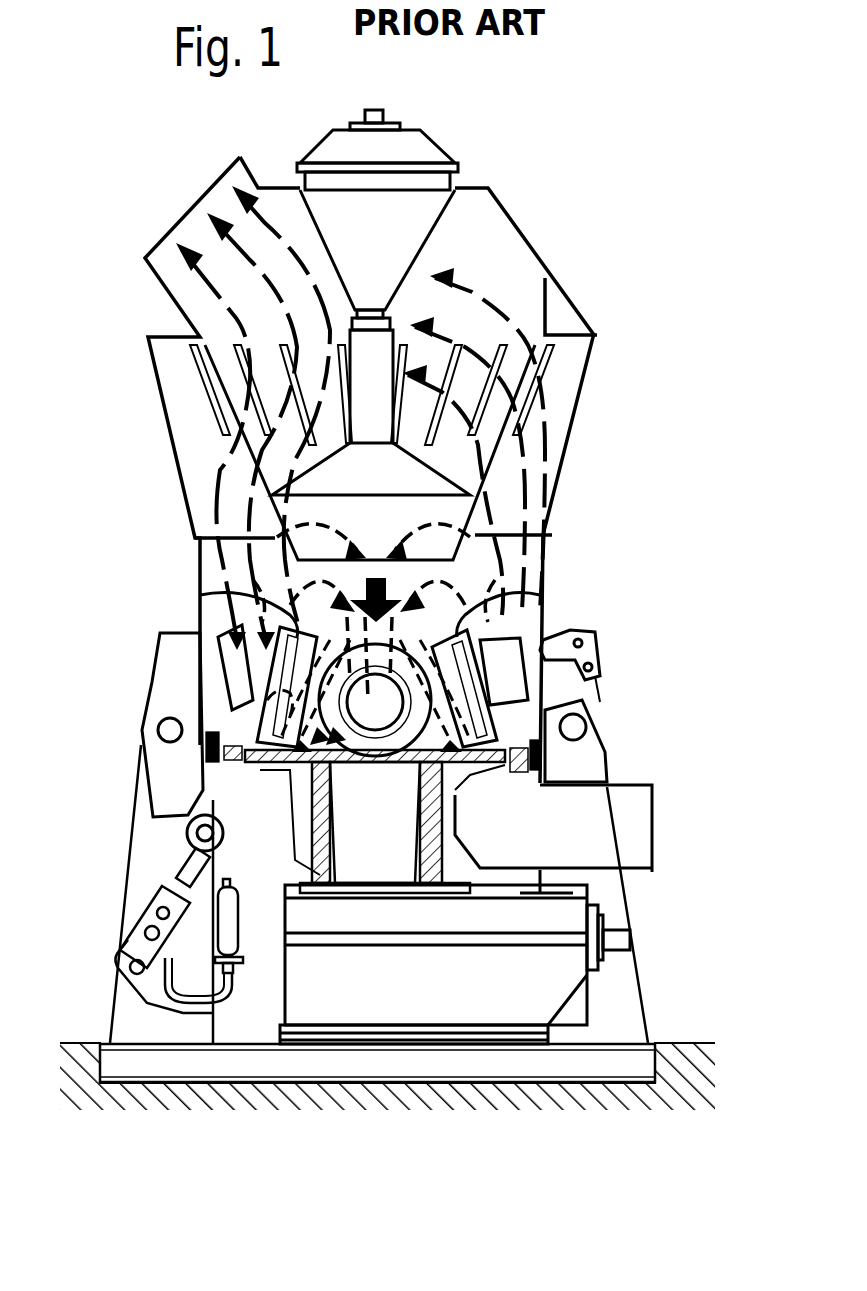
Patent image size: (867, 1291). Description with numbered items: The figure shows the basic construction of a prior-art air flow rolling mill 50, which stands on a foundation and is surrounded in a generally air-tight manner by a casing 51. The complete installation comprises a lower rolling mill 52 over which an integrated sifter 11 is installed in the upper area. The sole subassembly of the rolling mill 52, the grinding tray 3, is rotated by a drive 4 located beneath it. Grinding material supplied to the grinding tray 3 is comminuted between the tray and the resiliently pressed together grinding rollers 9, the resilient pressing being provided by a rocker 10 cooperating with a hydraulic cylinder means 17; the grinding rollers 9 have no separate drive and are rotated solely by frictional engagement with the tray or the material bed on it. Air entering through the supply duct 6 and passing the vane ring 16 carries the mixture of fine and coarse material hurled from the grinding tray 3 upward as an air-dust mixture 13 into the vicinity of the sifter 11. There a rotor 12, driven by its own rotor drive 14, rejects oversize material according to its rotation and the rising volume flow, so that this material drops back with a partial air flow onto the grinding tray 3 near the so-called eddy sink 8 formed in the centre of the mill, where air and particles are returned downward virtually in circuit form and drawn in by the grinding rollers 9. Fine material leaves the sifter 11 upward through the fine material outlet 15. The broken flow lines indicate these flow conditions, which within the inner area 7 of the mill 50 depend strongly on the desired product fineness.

The grinding tray 3 is at (215, 790).
The drive 4 is at (572, 985).
The supply duct 6 is at (632, 835).
The inner area 7 is at (470, 575).
The eddy sink 8 is at (360, 570).
The grinding rollers 9 is at (240, 620).
The rocker 10 is at (575, 642).
The sifter 11 is at (483, 245).
The rotor 12 is at (520, 478).
The air-dust mixture 13 is at (215, 470).
The rotor drive 14 is at (415, 185).
The fine material outlet 15 is at (195, 238).
The vane ring 16 is at (215, 758).
The hydraulic cylinder means 17 is at (150, 905).
The air flow rolling mill 50 is at (596, 236).
The casing 51 is at (168, 438).
The rolling mill 52 is at (462, 790).